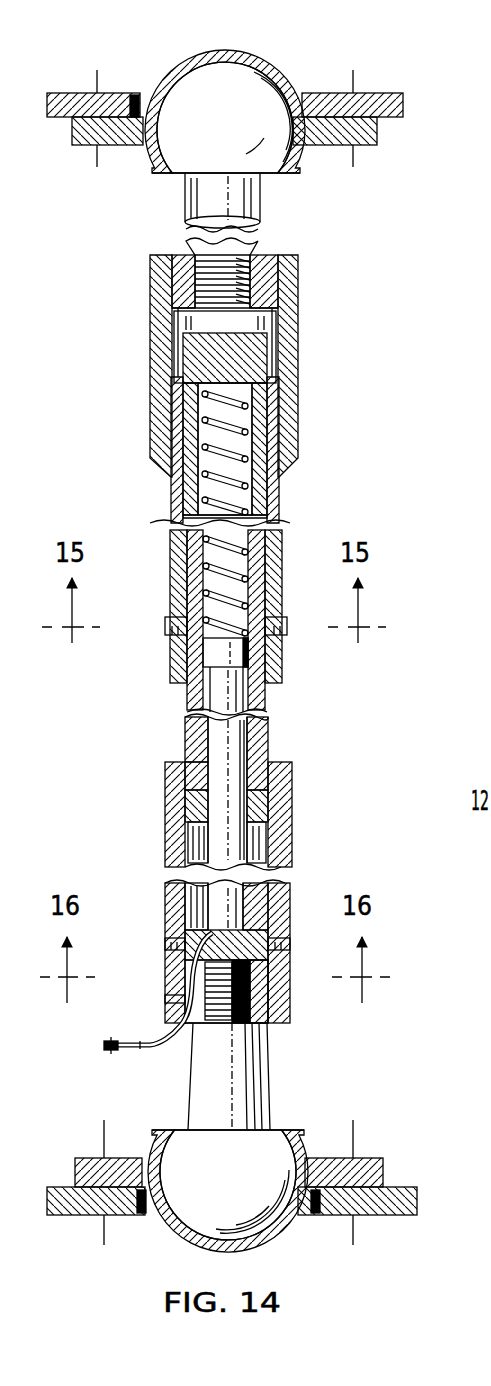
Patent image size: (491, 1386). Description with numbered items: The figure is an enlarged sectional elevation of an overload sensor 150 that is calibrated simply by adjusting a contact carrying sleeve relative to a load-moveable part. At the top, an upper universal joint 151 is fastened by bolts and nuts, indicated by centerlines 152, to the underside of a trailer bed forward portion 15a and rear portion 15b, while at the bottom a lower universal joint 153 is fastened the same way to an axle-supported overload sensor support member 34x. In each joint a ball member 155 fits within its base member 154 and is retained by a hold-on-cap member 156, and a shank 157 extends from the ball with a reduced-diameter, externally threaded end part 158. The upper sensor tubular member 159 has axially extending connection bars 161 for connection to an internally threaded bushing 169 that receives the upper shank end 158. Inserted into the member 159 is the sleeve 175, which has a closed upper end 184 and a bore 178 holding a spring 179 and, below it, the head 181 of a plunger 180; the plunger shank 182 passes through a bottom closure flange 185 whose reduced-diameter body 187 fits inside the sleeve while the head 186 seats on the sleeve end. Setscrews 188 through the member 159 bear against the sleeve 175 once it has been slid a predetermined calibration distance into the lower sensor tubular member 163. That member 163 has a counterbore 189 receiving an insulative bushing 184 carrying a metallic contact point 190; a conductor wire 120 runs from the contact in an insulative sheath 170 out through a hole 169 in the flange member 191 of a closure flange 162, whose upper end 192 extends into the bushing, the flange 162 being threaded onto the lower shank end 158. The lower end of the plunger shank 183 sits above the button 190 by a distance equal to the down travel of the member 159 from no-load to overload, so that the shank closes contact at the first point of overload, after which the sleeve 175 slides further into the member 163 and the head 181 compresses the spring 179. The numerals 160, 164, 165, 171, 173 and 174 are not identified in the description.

The overload sensor 150 is at (320, 707).
The upper universal joint 151 is at (280, 54).
The centerlines 152 is at (354, 80).
The lower universal joint 153 is at (176, 1238).
The base member 154 is at (206, 48).
The ball member 155 is at (251, 131).
The hold-on-cap member 156 is at (153, 166).
The shank 157 is at (262, 198).
The externally threaded end part 158 is at (205, 277).
The upper sensor tubular member 159 is at (150, 334).
The screw 160 is at (270, 286).
The connection bars 161 is at (290, 478).
The closure flange 162 is at (297, 1019).
The lower sensor tubular member 163 is at (298, 820).
The adjusting screw 164 is at (262, 988).
The pin 165 is at (166, 943).
The bushing 169 is at (164, 1008).
The insulative sheath 170 is at (168, 1048).
The plate 171 is at (204, 930).
The seal 173 is at (119, 92).
The seal 174 is at (304, 1214).
The sleeve 175 is at (265, 600).
The bore 178 is at (200, 490).
The spring 179 is at (247, 550).
The plunger 180 is at (250, 757).
The head 181 is at (250, 656).
The plunger shank 182 is at (218, 742).
The plunger shank lower end 183 is at (245, 918).
The closed upper end 184 is at (256, 359).
The bottom closure flange 185 is at (200, 812).
The head 186 is at (262, 806).
The body 187 is at (207, 778).
The setscrews 188 is at (166, 626).
The counterbore 189 is at (276, 930).
The contact point 190 is at (226, 926).
The flange member 191 is at (165, 1016).
The upper end 192 is at (268, 960).
The conductor wire 120 is at (114, 1051).
The trailer bed forward portion 15a is at (58, 92).
The trailer bed rear portion 15b is at (101, 81).
The overload sensor support member 34x is at (76, 1216).